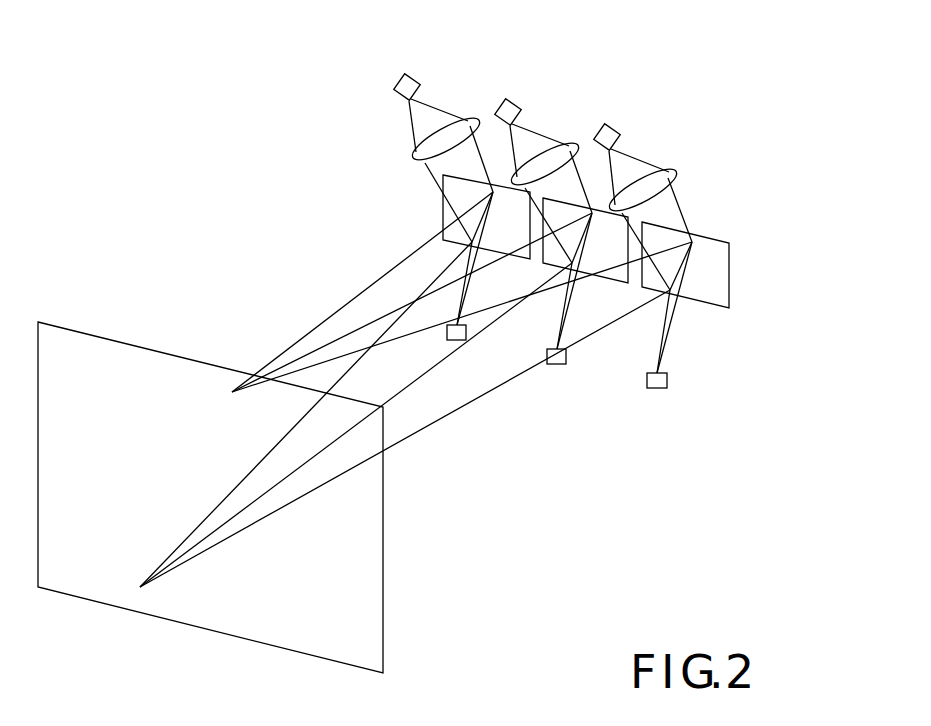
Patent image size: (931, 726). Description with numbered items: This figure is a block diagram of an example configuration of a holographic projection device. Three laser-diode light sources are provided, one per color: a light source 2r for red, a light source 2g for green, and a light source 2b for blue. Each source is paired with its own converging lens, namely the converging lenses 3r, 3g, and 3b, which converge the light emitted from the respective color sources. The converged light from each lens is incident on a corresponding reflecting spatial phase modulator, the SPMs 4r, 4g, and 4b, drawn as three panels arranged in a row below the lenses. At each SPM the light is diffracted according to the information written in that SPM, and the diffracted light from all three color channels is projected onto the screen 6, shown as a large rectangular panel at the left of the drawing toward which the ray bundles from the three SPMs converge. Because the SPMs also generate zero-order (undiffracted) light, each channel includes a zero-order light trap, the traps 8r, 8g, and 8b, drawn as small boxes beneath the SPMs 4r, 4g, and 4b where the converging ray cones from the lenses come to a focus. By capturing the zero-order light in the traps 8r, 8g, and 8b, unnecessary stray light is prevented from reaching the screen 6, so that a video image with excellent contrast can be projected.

The light source for red 2r is at (431, 100).
The converging lens 3r is at (470, 119).
The reflecting SPM 4r is at (493, 186).
The zero-order light trap 8r is at (449, 340).
The light source for green 2g is at (531, 124).
The converging lens 3g is at (569, 144).
The reflecting SPM 4g is at (593, 213).
The zero-order light trap 8g is at (559, 365).
The light source for blue 2b is at (631, 149).
The converging lens 3b is at (669, 171).
The reflecting SPM 4b is at (707, 238).
The zero-order light trap 8b is at (659, 389).
The screen 6 is at (384, 521).